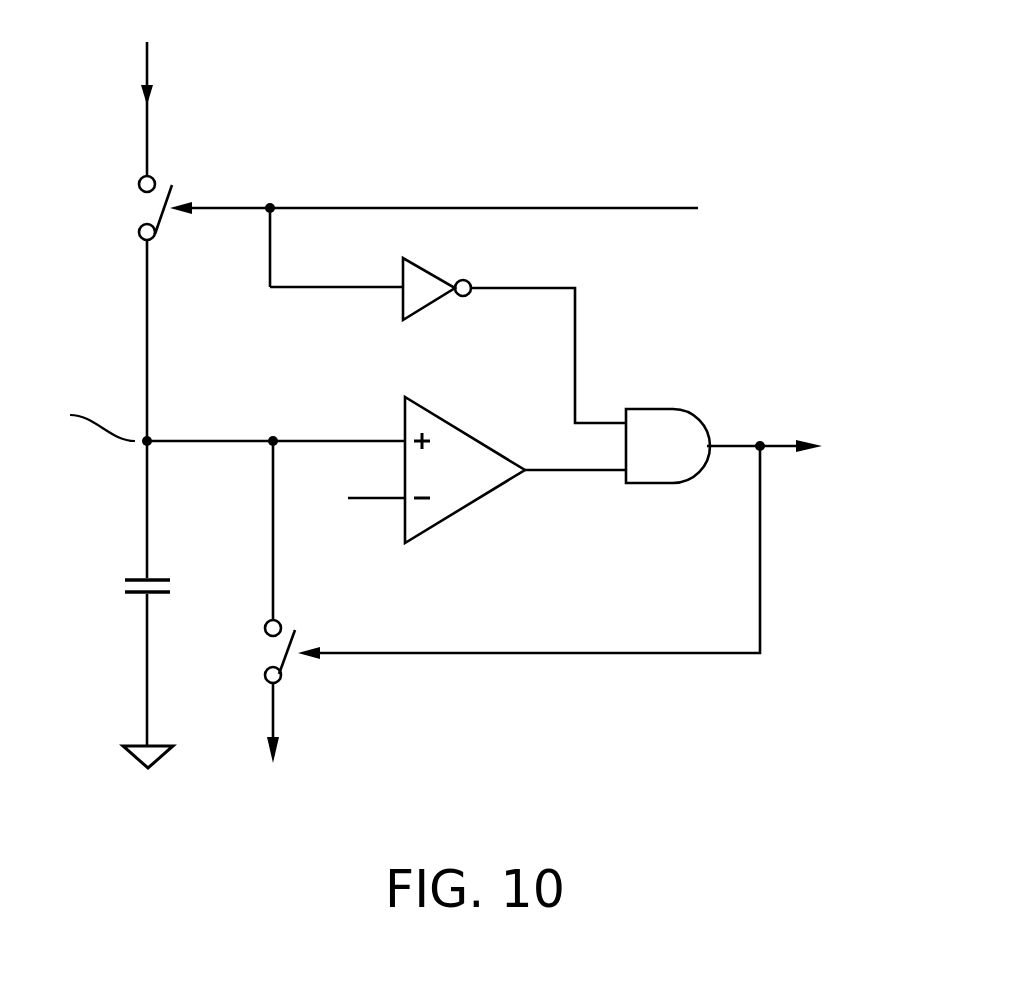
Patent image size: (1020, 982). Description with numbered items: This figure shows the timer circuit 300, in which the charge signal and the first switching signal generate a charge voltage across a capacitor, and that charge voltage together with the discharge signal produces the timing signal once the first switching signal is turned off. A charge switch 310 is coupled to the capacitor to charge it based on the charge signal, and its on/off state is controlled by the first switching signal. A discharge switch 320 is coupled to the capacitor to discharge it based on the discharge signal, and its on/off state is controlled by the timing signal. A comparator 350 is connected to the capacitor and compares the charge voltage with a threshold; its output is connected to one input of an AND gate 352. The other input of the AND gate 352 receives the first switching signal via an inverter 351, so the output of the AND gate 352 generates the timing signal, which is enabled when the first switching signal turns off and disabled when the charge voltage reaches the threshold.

The timer circuit 300 is at (845, 45).
The charge switch 310 is at (163, 176).
The discharge switch 320 is at (295, 670).
The comparator 350 is at (460, 515).
The inverter 351 is at (428, 307).
The AND gate 352 is at (658, 487).